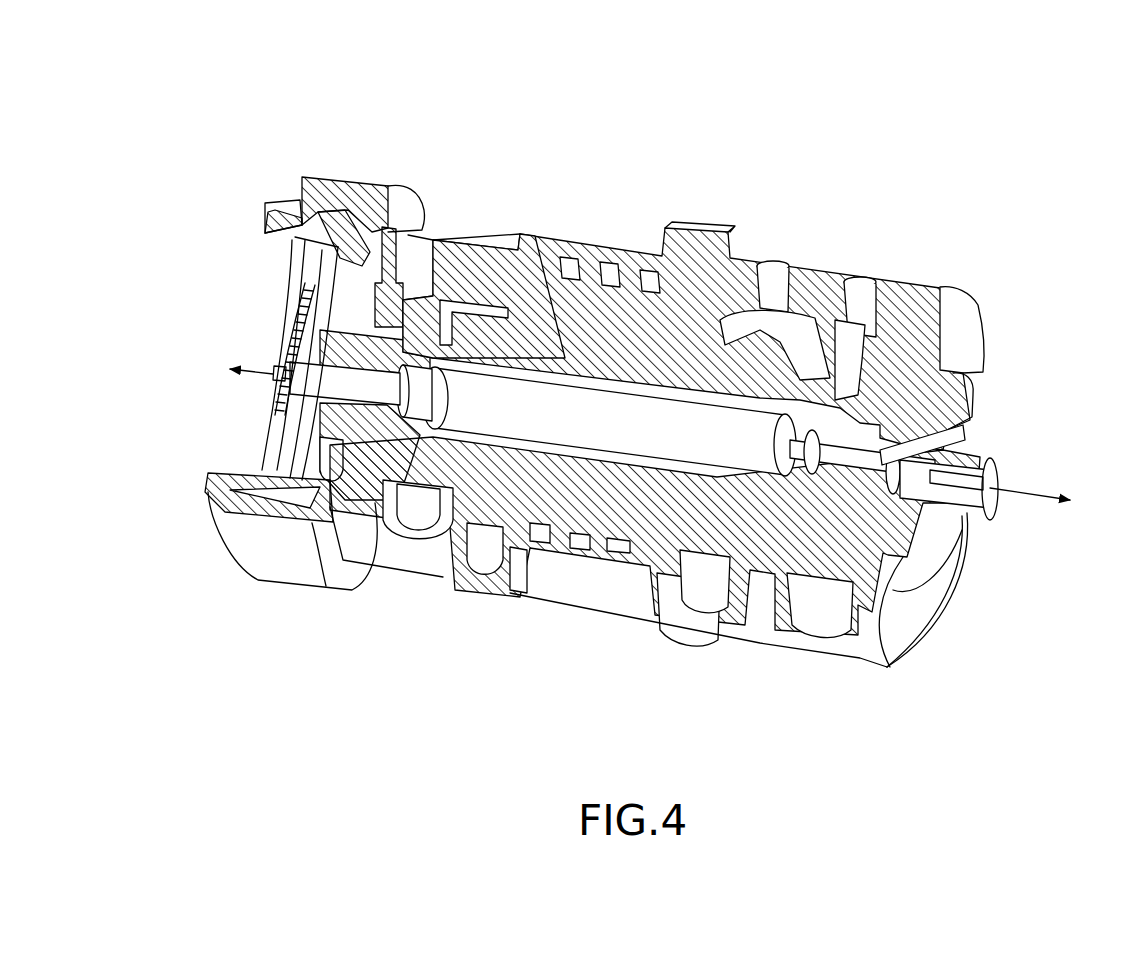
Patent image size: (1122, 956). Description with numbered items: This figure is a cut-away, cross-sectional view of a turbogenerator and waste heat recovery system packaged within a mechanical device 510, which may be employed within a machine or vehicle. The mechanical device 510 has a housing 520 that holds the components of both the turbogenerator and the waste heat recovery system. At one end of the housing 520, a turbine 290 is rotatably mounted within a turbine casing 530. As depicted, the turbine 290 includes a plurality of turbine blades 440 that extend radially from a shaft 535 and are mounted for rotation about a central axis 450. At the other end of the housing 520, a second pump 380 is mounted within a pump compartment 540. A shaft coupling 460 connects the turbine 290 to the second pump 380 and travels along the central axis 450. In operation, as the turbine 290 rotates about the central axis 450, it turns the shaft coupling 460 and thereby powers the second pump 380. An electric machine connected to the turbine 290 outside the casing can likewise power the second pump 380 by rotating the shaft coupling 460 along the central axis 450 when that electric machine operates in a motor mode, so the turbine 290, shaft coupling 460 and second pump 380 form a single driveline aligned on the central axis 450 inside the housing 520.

The mechanical device 510 is at (953, 101).
The housing 520 is at (932, 286).
The turbine casing 530 is at (290, 257).
The shaft 535 is at (282, 385).
The turbine blades 440 is at (290, 347).
The turbine 290 is at (283, 365).
The central axis 450 is at (243, 375).
The second pump 380 is at (960, 435).
The pump compartment 540 is at (907, 456).
The shaft coupling 460 is at (603, 427).